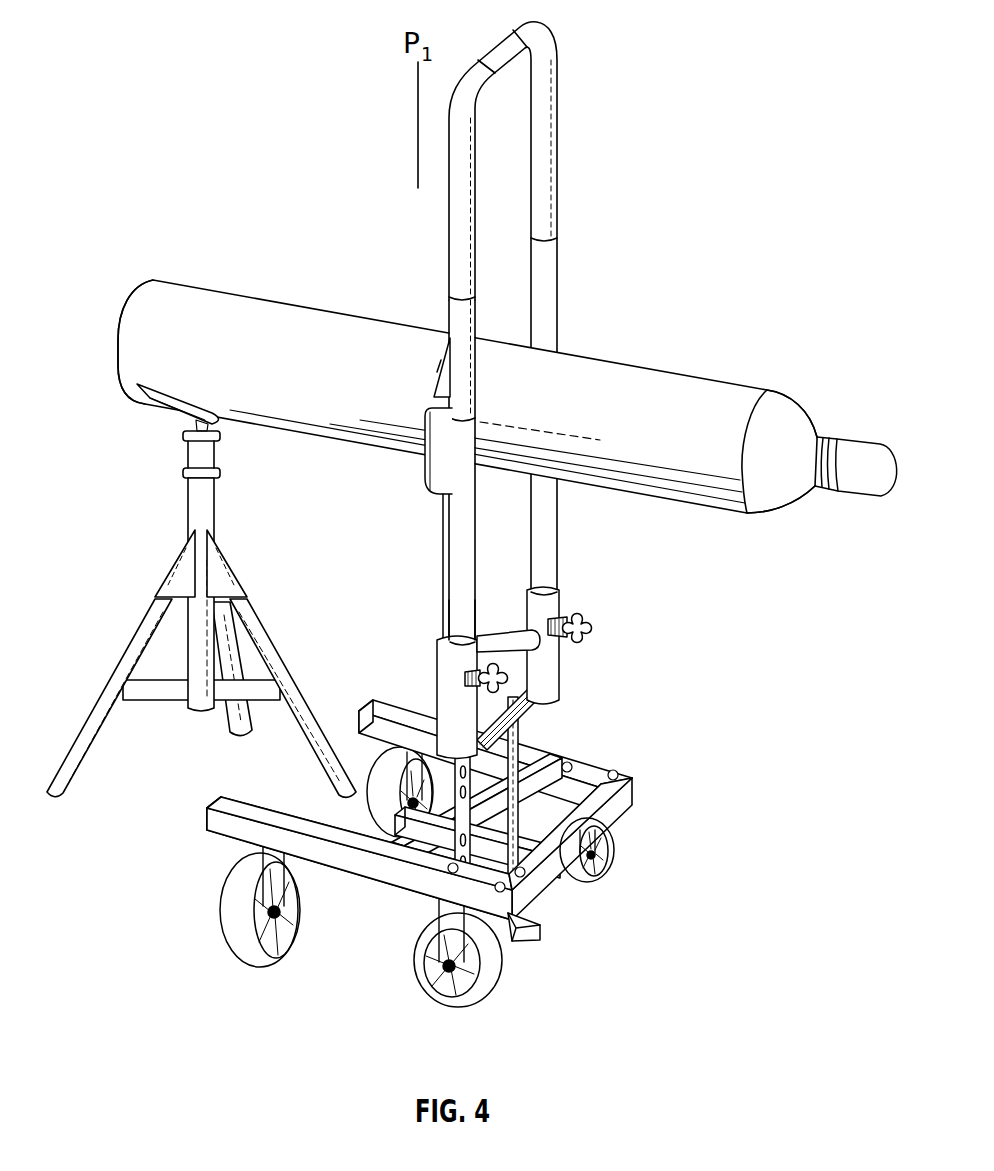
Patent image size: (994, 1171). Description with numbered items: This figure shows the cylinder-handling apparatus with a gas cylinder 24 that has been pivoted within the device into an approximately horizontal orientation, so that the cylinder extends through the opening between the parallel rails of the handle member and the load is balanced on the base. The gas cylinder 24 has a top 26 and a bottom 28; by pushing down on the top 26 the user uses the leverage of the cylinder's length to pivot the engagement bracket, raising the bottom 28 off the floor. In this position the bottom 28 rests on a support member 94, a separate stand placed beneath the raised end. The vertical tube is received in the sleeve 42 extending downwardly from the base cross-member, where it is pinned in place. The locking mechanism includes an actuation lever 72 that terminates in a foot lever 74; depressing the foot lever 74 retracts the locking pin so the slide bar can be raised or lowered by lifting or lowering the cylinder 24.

The gas cylinder 24 is at (476, 393).
The top 26 is at (829, 493).
The bottom 28 is at (118, 338).
The sleeve 42 is at (372, 878).
The actuation lever 72 is at (520, 740).
The foot lever 74 is at (548, 934).
The support member 94 is at (165, 574).